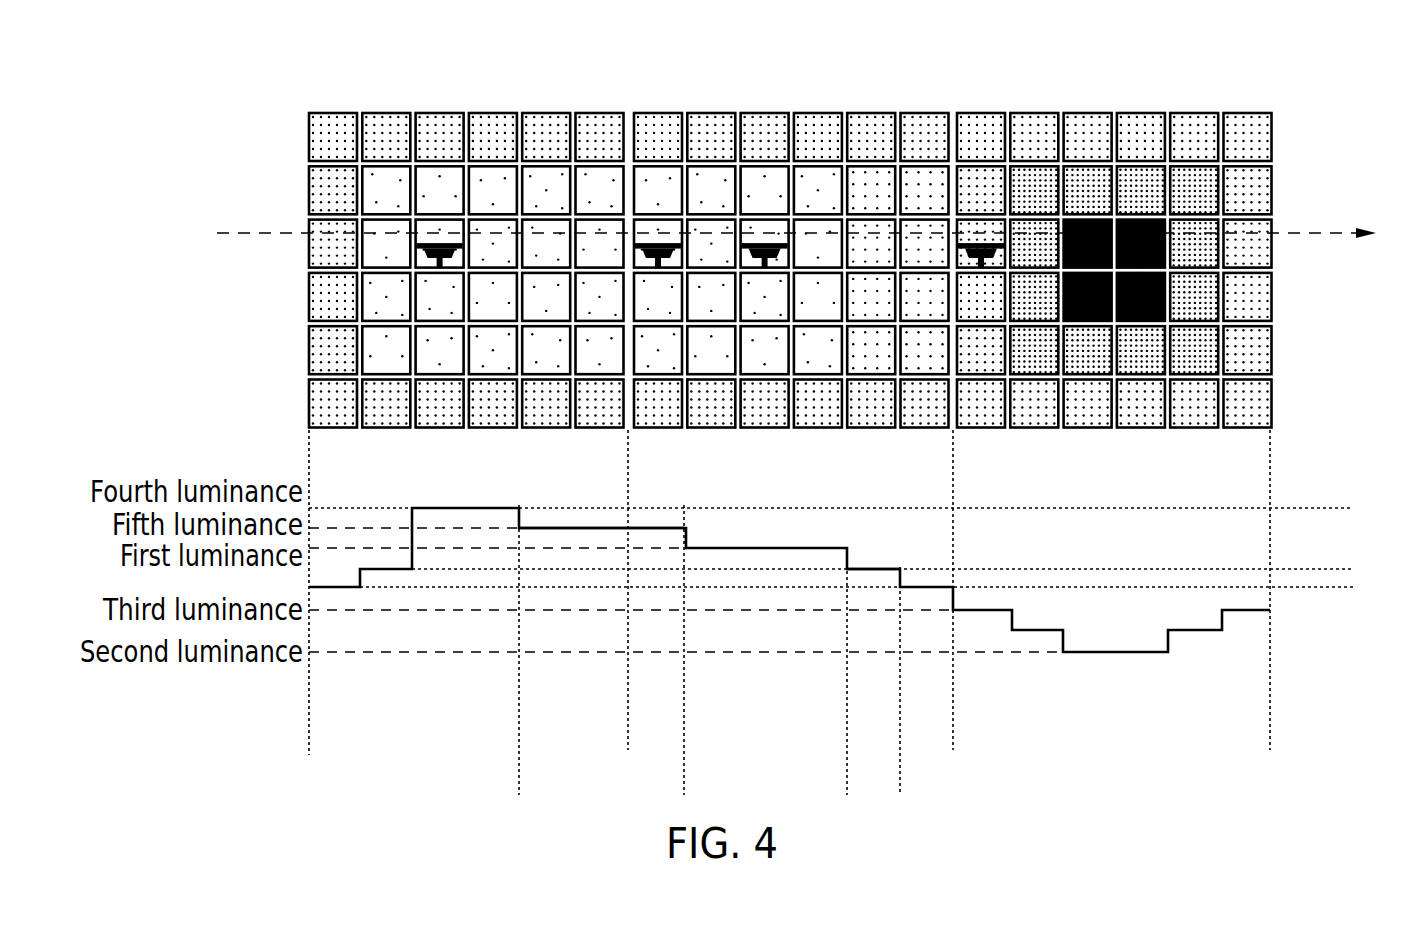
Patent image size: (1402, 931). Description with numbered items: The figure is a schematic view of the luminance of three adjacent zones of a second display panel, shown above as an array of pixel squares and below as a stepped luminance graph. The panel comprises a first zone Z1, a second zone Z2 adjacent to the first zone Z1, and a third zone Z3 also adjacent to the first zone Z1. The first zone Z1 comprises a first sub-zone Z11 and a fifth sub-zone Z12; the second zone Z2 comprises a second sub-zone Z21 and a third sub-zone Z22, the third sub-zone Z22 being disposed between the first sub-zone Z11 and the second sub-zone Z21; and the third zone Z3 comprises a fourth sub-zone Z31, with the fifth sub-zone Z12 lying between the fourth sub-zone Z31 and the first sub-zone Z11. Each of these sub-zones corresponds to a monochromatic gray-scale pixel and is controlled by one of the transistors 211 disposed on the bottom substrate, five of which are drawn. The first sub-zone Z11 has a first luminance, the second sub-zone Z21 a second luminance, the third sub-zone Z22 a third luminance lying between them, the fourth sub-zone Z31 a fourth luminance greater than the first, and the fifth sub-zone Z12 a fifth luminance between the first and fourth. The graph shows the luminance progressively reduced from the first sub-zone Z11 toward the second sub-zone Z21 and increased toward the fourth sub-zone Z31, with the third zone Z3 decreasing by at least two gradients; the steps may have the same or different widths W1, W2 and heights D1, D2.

The first zone Z1 is at (790, 370).
The second zone Z2 is at (1145, 370).
The third zone Z3 is at (429, 370).
The first sub-zone Z11 is at (760, 232).
The fifth sub-zone Z12 is at (655, 232).
The second sub-zone Z21 is at (1148, 242).
The third sub-zone Z22 is at (985, 232).
The fourth sub-zone Z31 is at (347, 170).
The transistor 211 is at (398, 258).
The width of luminance step W1 is at (684, 788).
The width of luminance step W2 is at (900, 788).
The height of luminance step D1 is at (1338, 508).
The height of luminance step D2 is at (1338, 587).